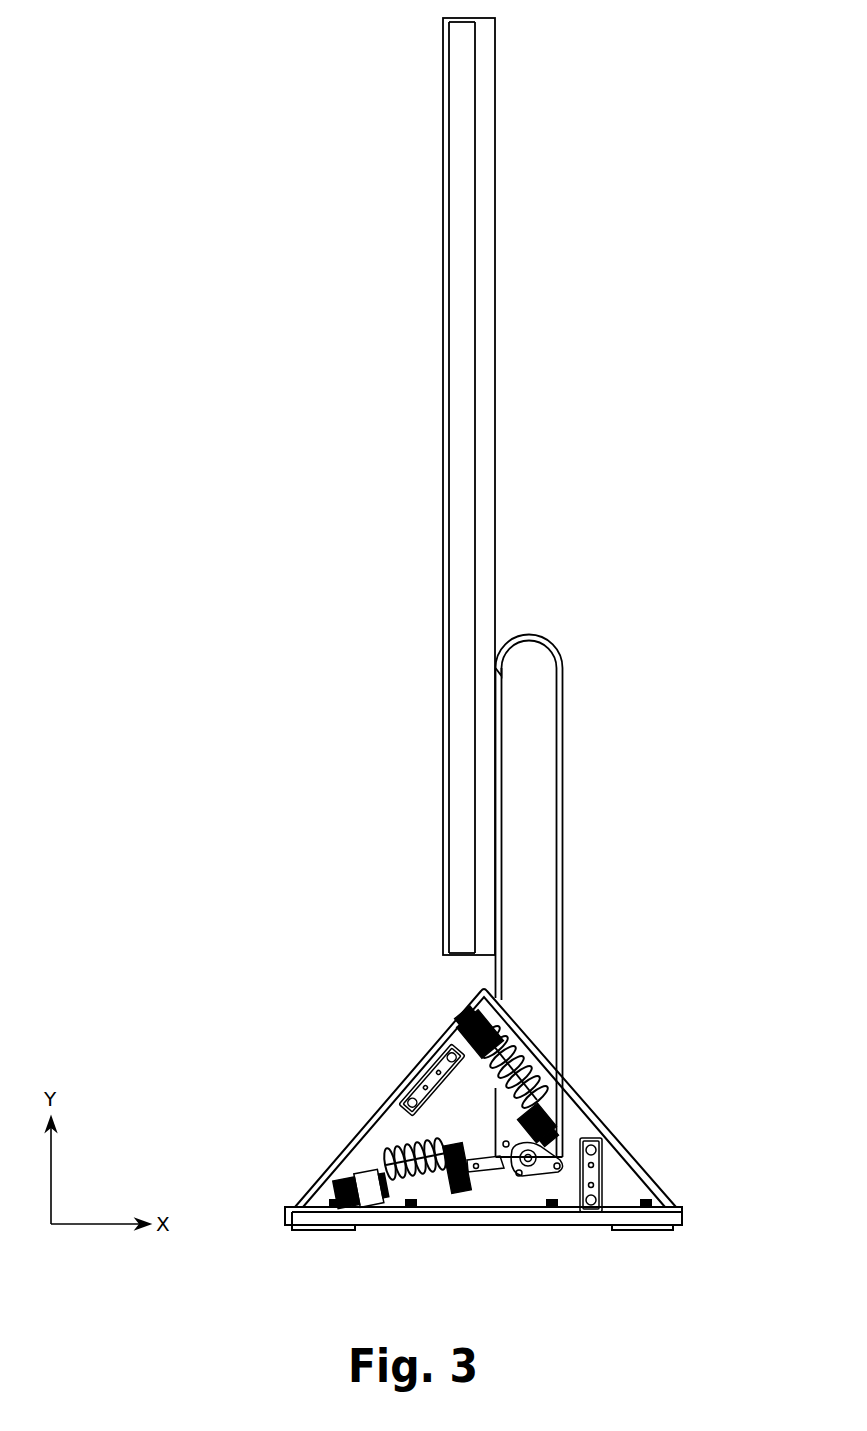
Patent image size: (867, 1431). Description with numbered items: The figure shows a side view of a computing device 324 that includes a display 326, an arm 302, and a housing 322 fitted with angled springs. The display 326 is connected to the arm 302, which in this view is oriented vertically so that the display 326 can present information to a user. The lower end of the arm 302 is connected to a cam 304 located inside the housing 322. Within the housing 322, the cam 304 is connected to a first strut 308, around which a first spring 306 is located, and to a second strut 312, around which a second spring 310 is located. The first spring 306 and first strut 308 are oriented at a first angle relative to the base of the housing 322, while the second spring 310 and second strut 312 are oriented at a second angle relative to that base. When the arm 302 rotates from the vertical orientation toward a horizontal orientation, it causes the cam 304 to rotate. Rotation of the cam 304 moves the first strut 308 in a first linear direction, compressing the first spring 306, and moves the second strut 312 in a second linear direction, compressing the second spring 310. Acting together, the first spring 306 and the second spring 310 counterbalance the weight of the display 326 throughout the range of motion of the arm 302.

The computing device 324 is at (186, 88).
The display 326 is at (443, 258).
The arm 302 is at (563, 771).
The housing 322 is at (660, 1193).
The second spring 310 is at (523, 1050).
The second strut 312 is at (561, 1076).
The first strut 308 is at (403, 1197).
The first spring 306 is at (428, 1197).
The cam 304 is at (545, 1166).